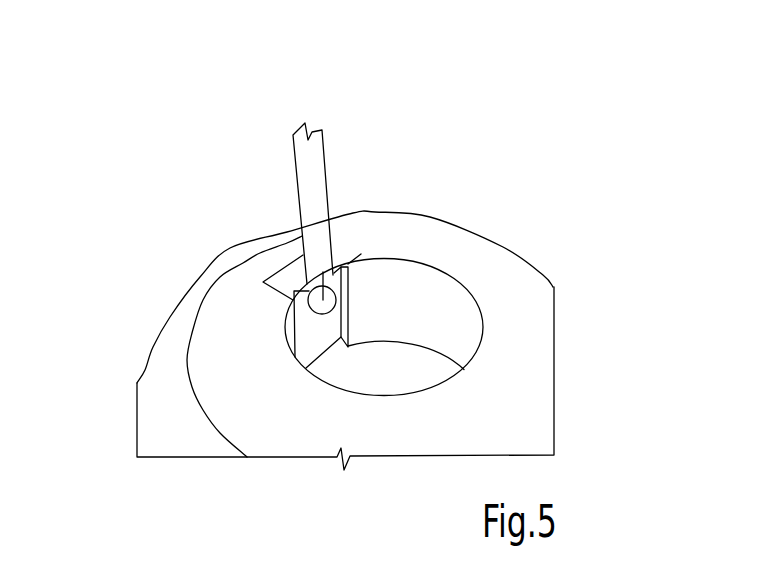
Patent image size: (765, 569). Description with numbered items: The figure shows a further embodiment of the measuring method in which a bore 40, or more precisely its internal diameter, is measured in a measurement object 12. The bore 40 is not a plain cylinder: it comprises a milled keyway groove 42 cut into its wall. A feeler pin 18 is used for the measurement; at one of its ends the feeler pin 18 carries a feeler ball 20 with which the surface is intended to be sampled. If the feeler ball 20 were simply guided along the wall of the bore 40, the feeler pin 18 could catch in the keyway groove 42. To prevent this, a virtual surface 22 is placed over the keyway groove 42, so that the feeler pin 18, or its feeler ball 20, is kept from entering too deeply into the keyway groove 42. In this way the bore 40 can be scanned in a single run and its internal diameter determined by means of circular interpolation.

The measurement object 12 is at (523, 292).
The feeler pin 18 is at (310, 165).
The feeler ball 20 is at (333, 258).
The virtual surface 22 is at (308, 325).
The bore 40 is at (420, 300).
The keyway groove 42 is at (278, 263).